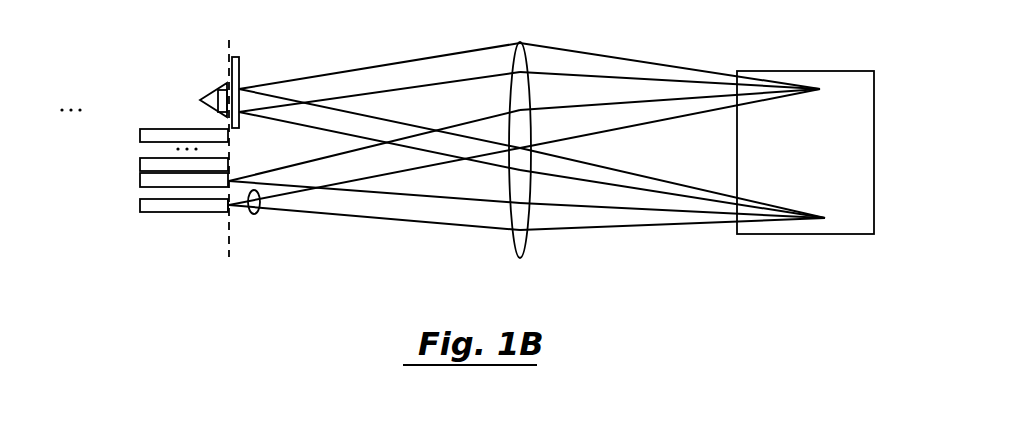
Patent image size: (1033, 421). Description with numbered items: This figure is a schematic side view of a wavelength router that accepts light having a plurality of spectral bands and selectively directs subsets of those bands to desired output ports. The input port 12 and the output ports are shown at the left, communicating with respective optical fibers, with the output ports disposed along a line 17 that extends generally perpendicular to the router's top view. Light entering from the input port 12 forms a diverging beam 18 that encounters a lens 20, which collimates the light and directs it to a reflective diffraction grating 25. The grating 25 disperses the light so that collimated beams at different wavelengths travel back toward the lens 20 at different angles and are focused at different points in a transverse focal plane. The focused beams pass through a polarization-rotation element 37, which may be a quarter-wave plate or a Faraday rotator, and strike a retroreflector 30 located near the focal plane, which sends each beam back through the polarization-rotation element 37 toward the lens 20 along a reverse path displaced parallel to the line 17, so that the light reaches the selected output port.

The input port 12 is at (231, 208).
The line 17 is at (229, 248).
The diverging beam 18 is at (259, 213).
The lens 20 is at (514, 242).
The reflective diffraction grating 25 is at (813, 70).
The retroreflector 30 is at (220, 88).
The polarization-rotation element 37 is at (240, 65).